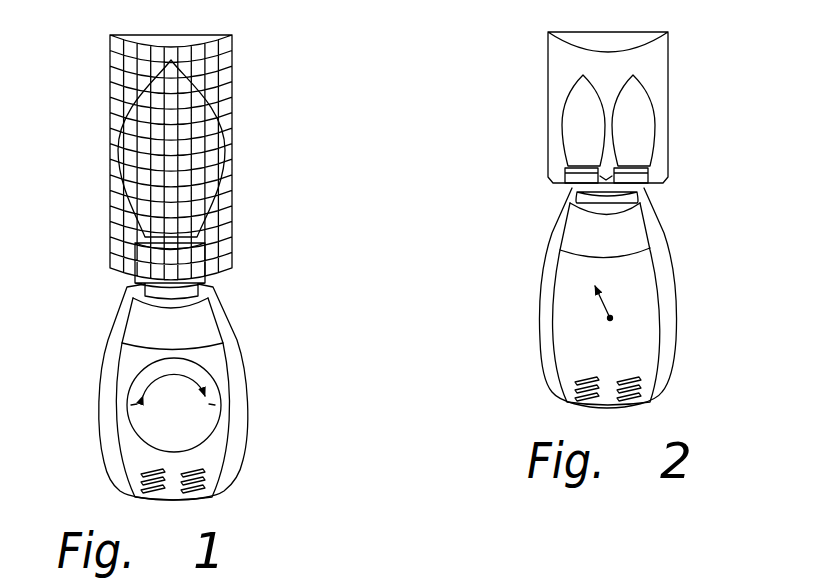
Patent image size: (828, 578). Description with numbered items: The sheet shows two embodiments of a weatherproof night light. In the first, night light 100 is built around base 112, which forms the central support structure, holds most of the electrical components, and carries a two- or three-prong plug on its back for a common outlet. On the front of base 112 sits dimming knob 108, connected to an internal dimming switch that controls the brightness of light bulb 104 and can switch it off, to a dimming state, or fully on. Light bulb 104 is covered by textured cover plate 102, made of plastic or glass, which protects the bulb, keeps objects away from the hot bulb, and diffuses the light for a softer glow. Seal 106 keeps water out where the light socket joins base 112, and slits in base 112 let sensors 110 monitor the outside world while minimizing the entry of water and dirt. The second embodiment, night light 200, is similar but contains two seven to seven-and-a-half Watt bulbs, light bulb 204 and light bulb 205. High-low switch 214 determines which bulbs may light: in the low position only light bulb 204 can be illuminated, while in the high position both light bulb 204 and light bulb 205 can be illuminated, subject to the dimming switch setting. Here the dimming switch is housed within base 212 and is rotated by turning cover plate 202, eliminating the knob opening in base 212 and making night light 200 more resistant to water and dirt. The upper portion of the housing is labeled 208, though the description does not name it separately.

In FIG. 1, the night light 100 is at (341, 343).
In FIG. 1, the textured cover plate 102 is at (110, 36).
In FIG. 1, the light bulb 104 is at (137, 160).
In FIG. 1, the seal 106 is at (136, 283).
In FIG. 1, the dimming knob 108 is at (132, 413).
In FIG. 1, the sensors 110 is at (143, 478).
In FIG. 1, the base 112 is at (110, 342).
In FIG. 2, the night light 200 is at (514, 372).
In FIG. 2, the cover plate 202 is at (668, 58).
In FIG. 2, the light bulb 204 is at (575, 110).
In FIG. 2, the light bulb 205 is at (650, 123).
In FIG. 2, the upper housing portion 208 is at (578, 223).
In FIG. 2, the base 212 is at (648, 295).
In FIG. 2, the high-low switch 214 is at (603, 310).